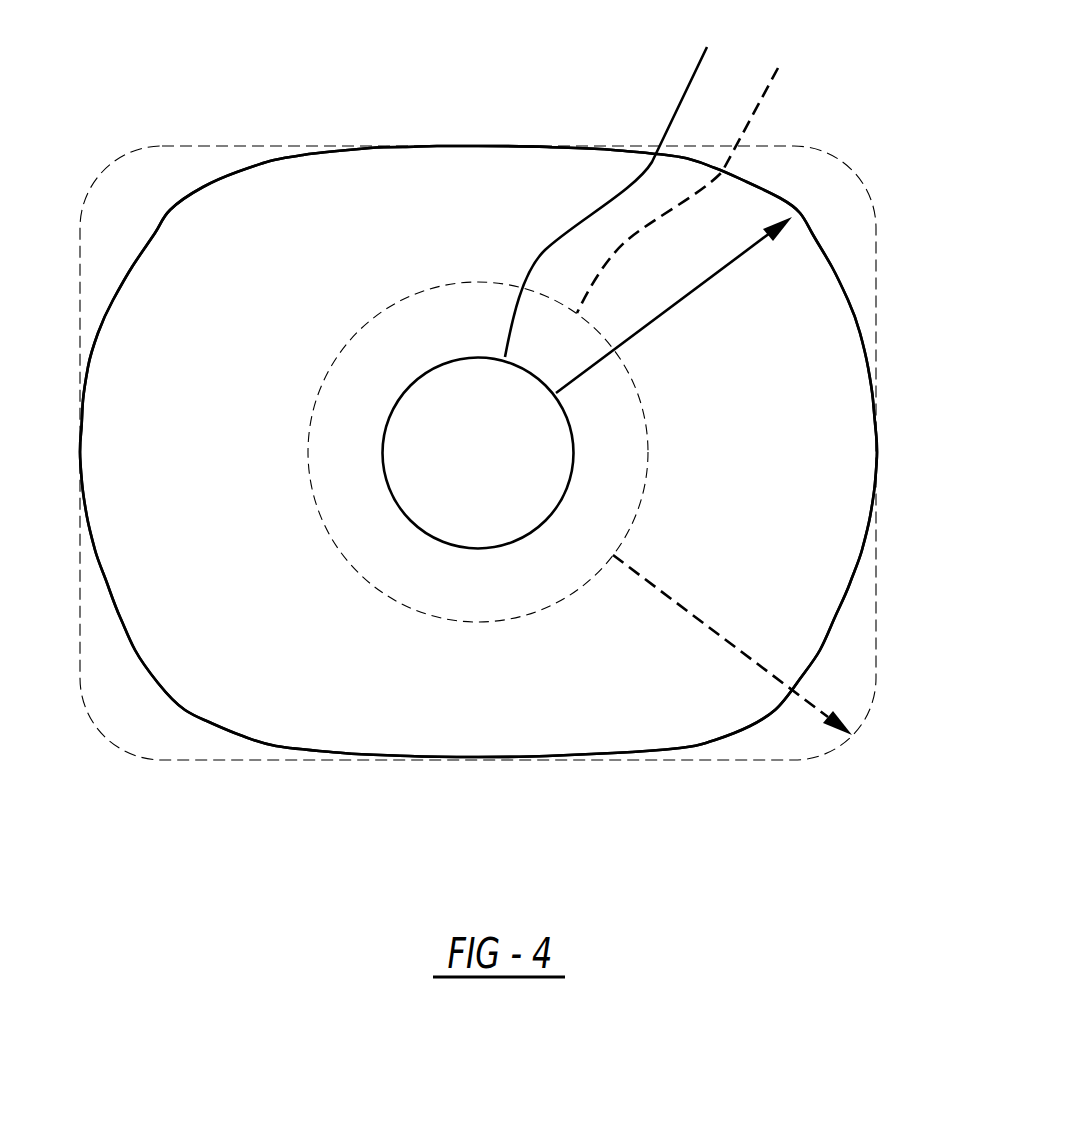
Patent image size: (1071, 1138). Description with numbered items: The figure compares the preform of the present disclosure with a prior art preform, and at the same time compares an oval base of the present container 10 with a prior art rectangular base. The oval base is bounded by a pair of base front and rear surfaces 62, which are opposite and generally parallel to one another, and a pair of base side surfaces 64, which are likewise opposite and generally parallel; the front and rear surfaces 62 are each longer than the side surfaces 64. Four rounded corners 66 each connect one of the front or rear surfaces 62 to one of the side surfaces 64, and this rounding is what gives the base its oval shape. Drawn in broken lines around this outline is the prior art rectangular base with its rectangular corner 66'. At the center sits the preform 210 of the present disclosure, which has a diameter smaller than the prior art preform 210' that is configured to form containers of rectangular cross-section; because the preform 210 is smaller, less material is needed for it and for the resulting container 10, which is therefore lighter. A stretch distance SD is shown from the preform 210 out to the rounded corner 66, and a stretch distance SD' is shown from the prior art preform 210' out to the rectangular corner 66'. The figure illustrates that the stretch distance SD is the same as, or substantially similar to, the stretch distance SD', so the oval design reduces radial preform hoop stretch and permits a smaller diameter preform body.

The container 10 is at (404, 145).
The base front and rear surfaces 62 is at (547, 146).
The base side surfaces 64 is at (81, 428).
The rounded corners 66 is at (484, 388).
The rectangular corner of prior art container 66' is at (455, 464).
The preform 210 is at (616, 181).
The prior art preform 210' is at (695, 171).
The stretch distance SD is at (674, 305).
The stretch distance of prior art preform SD' is at (732, 613).